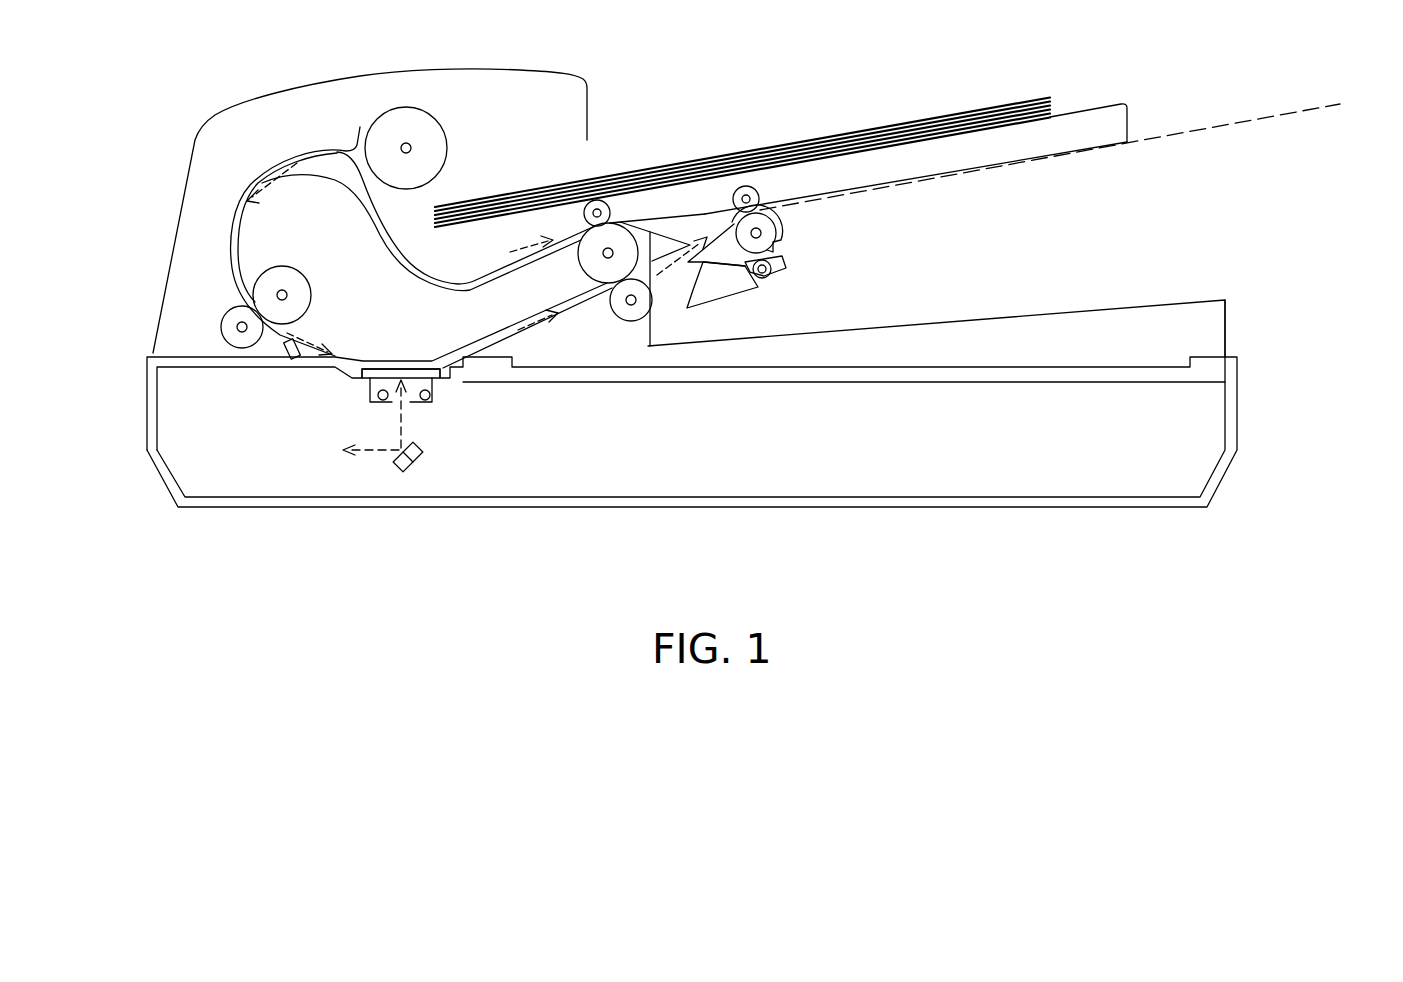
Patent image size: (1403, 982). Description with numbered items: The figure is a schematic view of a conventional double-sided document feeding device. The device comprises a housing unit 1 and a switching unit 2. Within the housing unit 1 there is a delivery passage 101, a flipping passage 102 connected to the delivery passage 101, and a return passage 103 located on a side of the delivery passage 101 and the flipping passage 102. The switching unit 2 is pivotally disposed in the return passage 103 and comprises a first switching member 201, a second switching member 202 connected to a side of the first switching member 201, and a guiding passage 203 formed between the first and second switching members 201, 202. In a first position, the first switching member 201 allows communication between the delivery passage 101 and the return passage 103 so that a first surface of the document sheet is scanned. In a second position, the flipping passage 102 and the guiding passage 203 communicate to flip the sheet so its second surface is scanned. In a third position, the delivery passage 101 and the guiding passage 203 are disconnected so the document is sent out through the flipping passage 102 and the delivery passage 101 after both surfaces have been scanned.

The housing unit 1 is at (140, 408).
The delivery passage 101 is at (237, 223).
The flipping passage 102 is at (472, 280).
The return passage 103 is at (695, 232).
The switching unit 2 is at (727, 314).
The first switching member 201 is at (743, 250).
The second switching member 202 is at (705, 293).
The guiding passage 203 is at (730, 264).